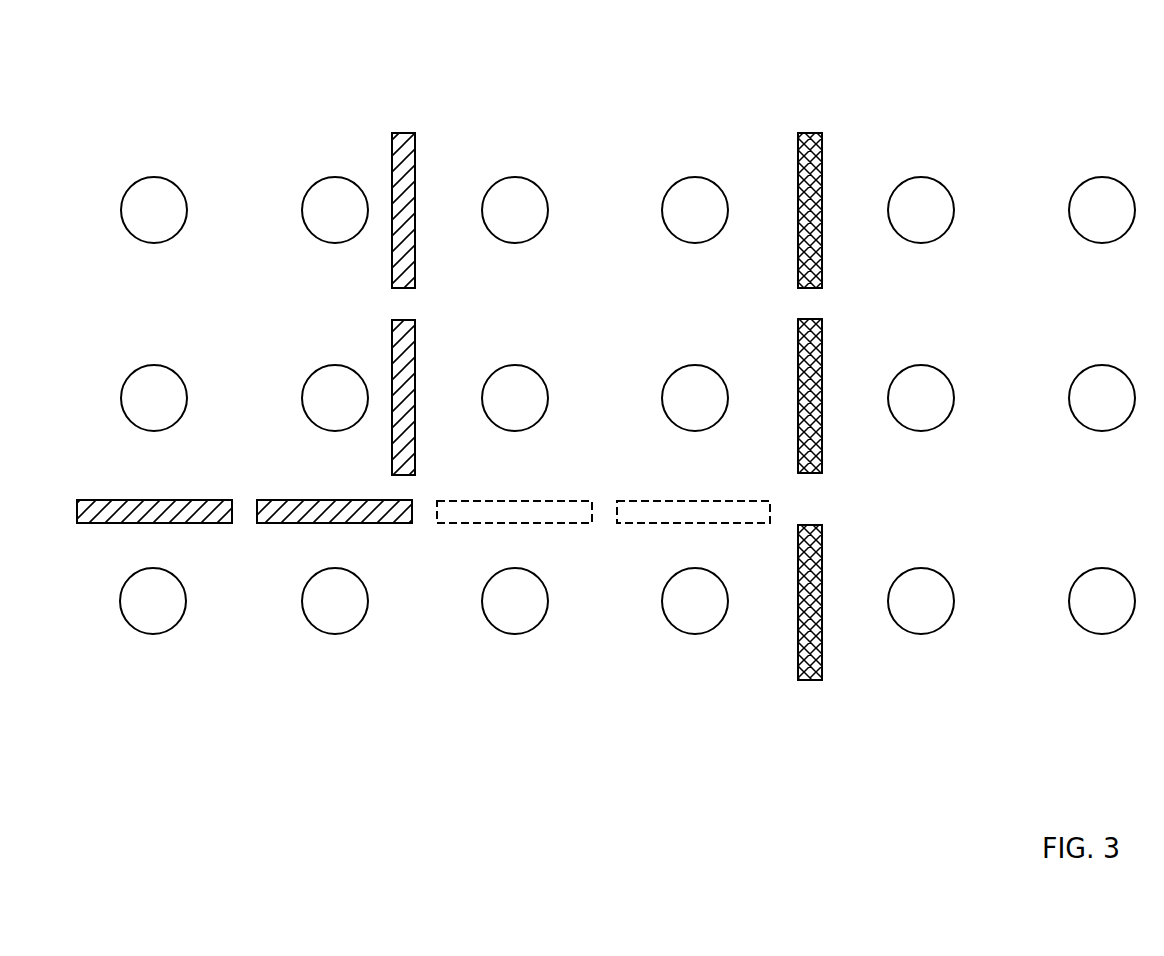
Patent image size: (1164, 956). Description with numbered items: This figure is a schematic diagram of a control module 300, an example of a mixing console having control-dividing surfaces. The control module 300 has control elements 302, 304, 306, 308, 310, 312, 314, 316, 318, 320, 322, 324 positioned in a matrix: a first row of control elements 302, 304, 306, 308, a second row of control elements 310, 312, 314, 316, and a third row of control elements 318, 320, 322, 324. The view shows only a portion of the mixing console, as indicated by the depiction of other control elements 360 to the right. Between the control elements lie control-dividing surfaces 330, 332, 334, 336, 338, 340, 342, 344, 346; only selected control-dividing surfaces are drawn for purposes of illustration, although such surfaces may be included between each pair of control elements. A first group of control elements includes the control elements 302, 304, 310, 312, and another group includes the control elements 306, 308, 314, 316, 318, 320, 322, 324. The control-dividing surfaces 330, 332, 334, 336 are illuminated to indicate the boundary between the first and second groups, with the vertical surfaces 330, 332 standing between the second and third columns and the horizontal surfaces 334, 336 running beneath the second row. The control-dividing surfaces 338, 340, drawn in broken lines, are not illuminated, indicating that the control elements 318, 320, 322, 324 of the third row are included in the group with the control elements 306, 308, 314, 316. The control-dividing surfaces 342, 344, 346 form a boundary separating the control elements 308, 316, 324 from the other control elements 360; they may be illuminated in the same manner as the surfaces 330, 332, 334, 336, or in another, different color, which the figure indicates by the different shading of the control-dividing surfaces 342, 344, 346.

The control module 300 is at (606, 346).
The control element 302 is at (154, 177).
The control element 304 is at (335, 177).
The control element 306 is at (515, 177).
The control element 308 is at (695, 177).
The control element 310 is at (154, 365).
The control element 312 is at (335, 365).
The control element 314 is at (515, 365).
The control element 316 is at (695, 365).
The control element 318 is at (153, 568).
The control element 320 is at (335, 568).
The control element 322 is at (515, 568).
The control element 324 is at (695, 568).
The control-dividing surface 330 is at (415, 145).
The control-dividing surface 332 is at (415, 333).
The control-dividing surface 334 is at (221, 500).
The control-dividing surface 336 is at (372, 500).
The control-dividing surface 338 is at (579, 501).
The control-dividing surface 340 is at (757, 501).
The control-dividing surface 342 is at (822, 146).
The control-dividing surface 344 is at (822, 333).
The control-dividing surface 346 is at (822, 539).
The other control elements 360 is at (1085, 238).